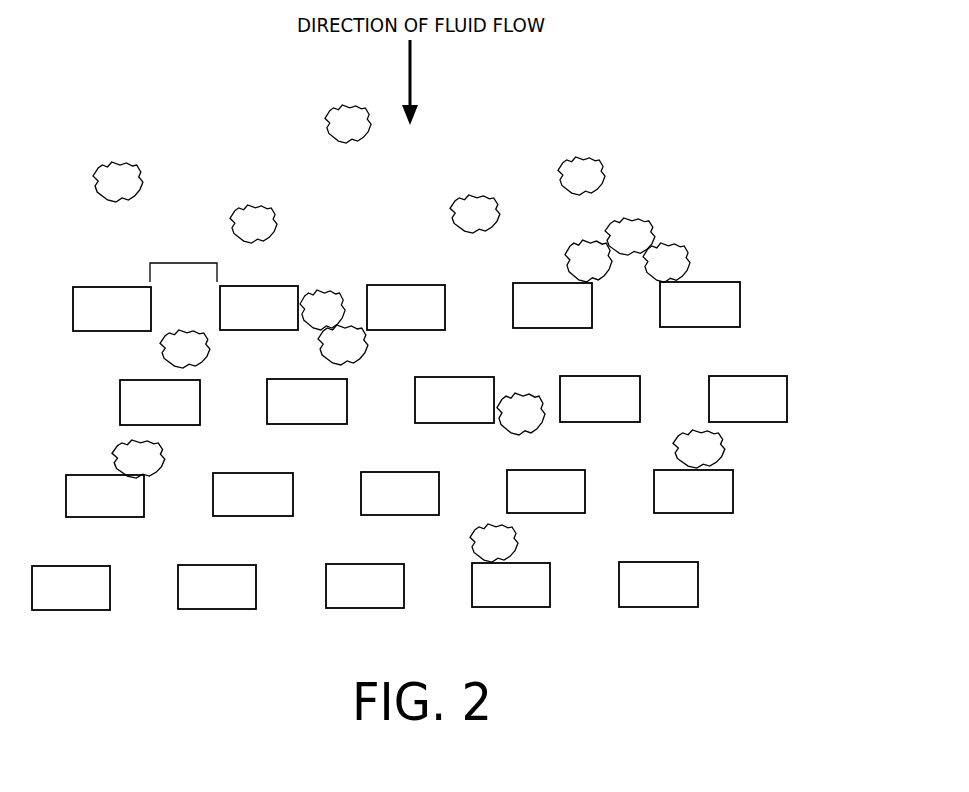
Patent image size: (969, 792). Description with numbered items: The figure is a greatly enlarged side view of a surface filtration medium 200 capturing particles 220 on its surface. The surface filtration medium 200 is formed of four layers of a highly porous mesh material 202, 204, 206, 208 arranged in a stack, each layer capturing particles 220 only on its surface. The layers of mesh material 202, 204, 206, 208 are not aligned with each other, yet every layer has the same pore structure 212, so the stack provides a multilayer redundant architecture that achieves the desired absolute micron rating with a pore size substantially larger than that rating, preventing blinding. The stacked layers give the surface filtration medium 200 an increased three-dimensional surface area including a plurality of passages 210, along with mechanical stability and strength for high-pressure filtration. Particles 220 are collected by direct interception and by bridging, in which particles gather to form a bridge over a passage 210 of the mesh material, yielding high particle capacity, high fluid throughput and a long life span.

The surface filtration medium 200 is at (762, 238).
The mesh material layer 202 is at (750, 305).
The mesh material layer 204 is at (797, 399).
The mesh material layer 206 is at (740, 499).
The mesh material layer 208 is at (705, 589).
The passage 210 is at (502, 358).
The pore structure 212 is at (184, 263).
The particles 220 is at (114, 158).